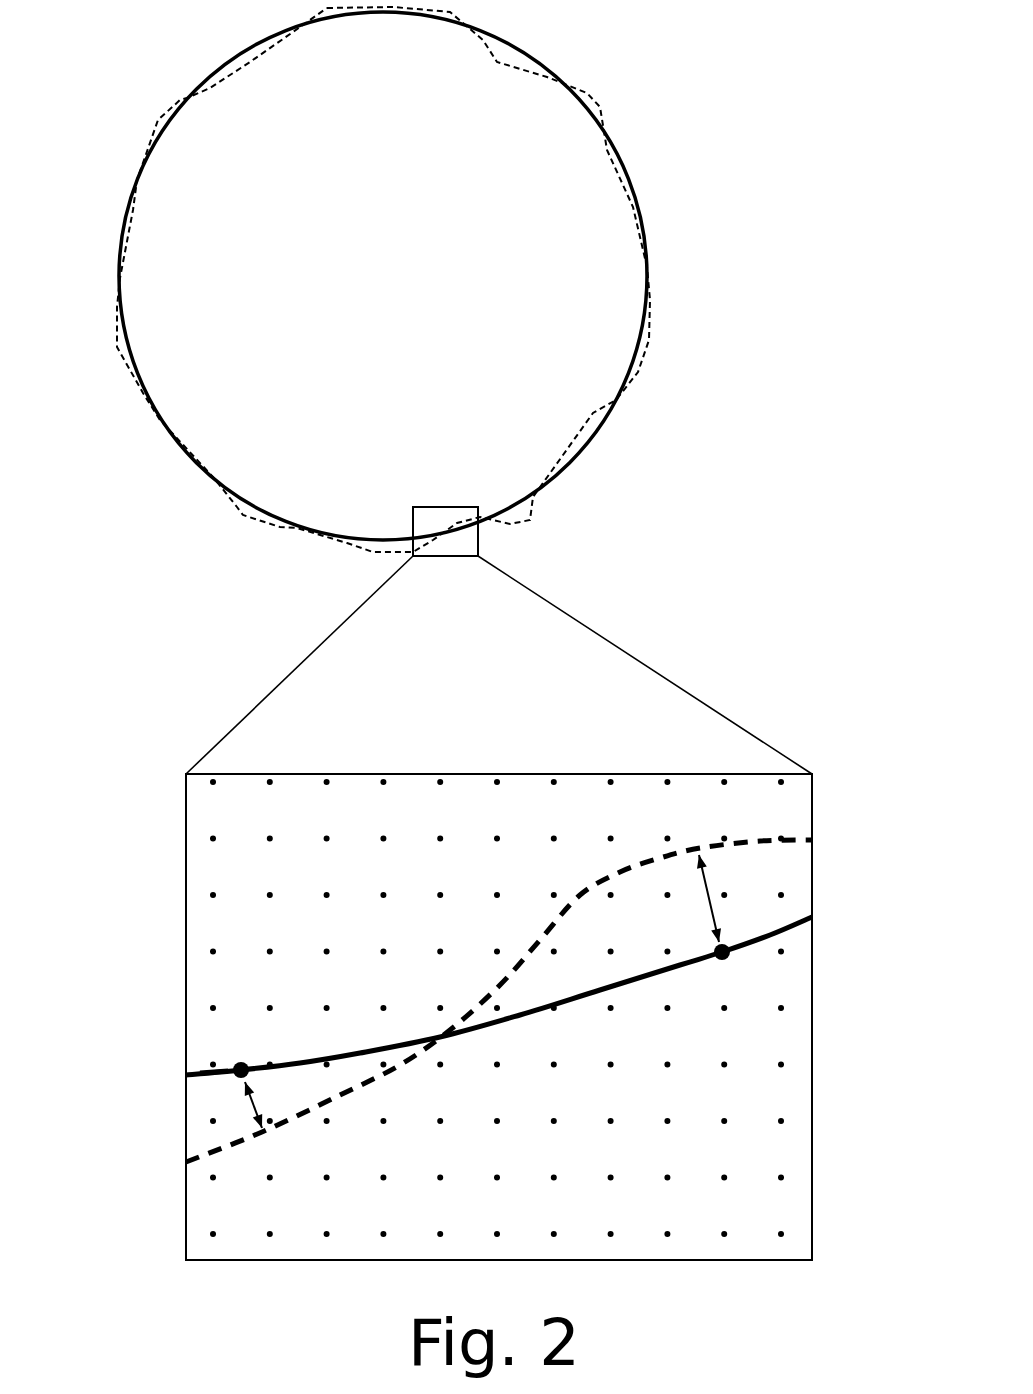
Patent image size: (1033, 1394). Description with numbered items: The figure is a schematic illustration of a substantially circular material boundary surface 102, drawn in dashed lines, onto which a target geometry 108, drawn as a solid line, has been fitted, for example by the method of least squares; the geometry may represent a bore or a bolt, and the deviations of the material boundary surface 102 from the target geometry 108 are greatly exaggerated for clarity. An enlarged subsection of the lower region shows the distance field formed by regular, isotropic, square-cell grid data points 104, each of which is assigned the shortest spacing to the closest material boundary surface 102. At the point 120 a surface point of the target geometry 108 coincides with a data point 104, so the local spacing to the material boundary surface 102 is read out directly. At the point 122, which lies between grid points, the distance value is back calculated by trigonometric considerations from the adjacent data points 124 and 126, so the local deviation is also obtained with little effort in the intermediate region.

The material boundary surface 102 is at (590, 94).
The data points of the distance field 104 is at (497, 837).
The target geometry 108 is at (580, 105).
The point 120 is at (708, 908).
The point 122 is at (240, 1078).
The adjacent data point 124 is at (268, 1067).
The adjacent data point 126 is at (215, 1063).